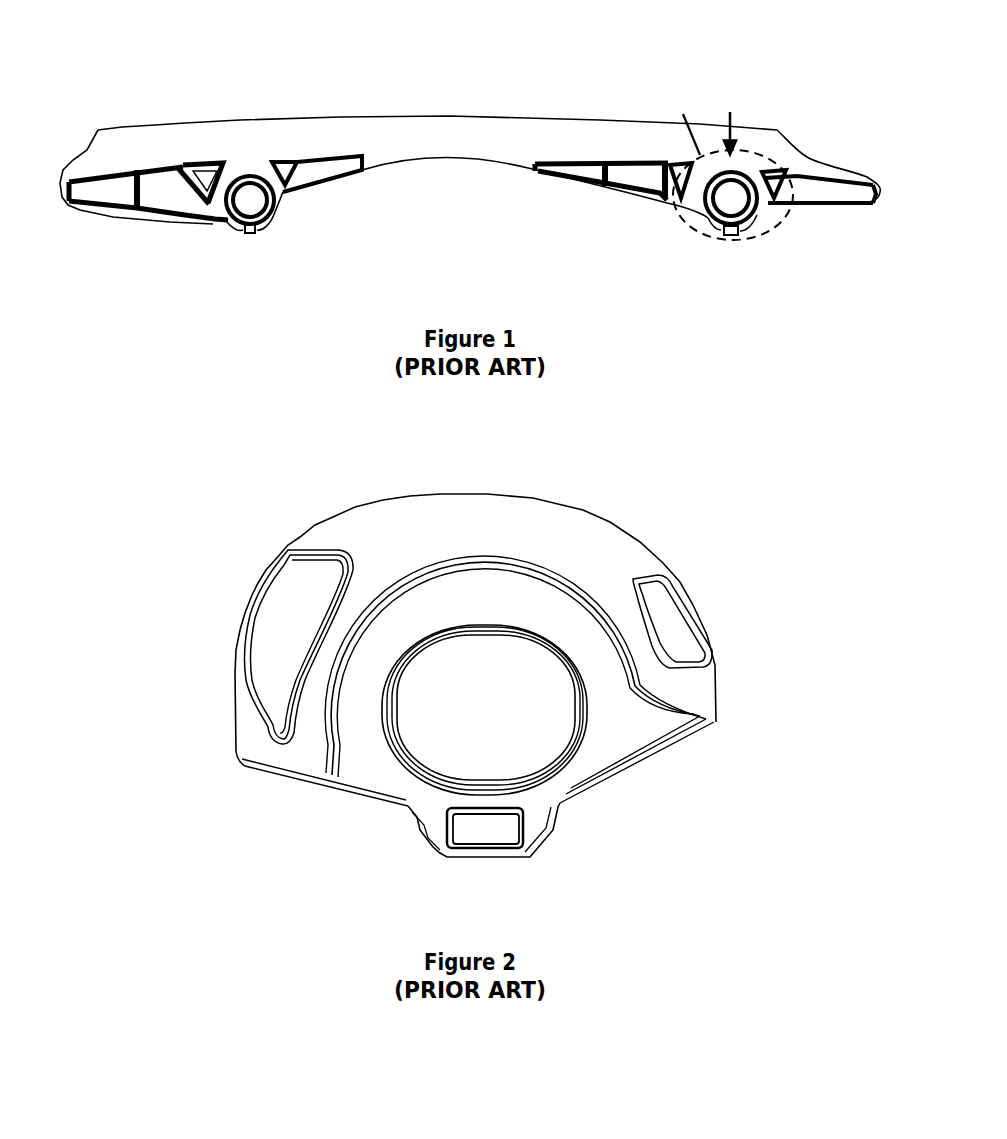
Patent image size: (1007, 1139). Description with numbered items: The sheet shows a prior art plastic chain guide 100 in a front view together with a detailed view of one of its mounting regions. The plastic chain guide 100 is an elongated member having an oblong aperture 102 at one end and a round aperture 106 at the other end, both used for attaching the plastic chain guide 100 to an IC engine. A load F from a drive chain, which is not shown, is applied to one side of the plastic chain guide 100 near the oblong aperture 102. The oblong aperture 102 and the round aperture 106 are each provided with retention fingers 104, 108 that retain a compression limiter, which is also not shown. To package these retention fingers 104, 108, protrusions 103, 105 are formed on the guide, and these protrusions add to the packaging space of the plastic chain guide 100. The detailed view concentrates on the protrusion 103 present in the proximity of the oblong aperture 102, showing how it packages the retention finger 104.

In FIG. 1, the plastic chain guide 100 is at (790, 97).
In FIG. 1, the oblong aperture 102 is at (752, 200).
In FIG. 2, the oblong aperture 102 is at (565, 750).
In FIG. 1, the protrusion 103 is at (718, 227).
In FIG. 2, the protrusion 103 is at (423, 842).
In FIG. 1, the retention finger 104 is at (733, 232).
In FIG. 2, the retention finger 104 is at (500, 830).
In FIG. 1, the protrusion 105 is at (242, 227).
In FIG. 1, the round aperture 106 is at (268, 198).
In FIG. 1, the retention finger 108 is at (255, 231).